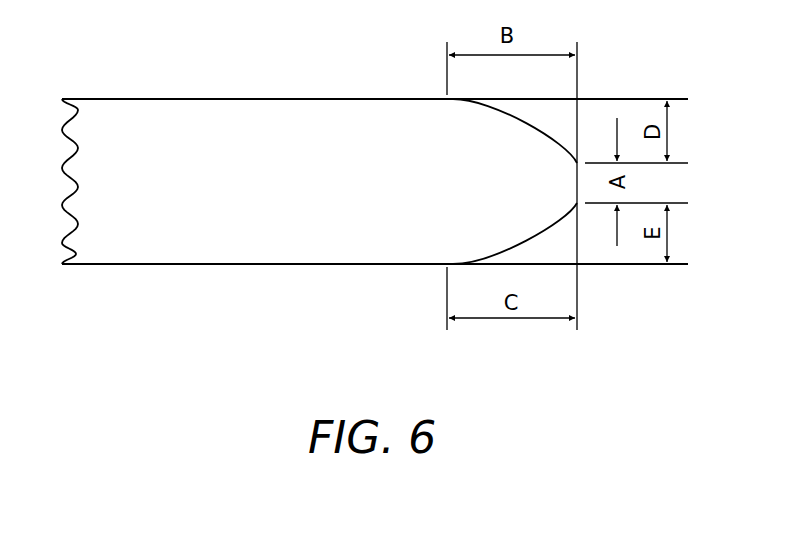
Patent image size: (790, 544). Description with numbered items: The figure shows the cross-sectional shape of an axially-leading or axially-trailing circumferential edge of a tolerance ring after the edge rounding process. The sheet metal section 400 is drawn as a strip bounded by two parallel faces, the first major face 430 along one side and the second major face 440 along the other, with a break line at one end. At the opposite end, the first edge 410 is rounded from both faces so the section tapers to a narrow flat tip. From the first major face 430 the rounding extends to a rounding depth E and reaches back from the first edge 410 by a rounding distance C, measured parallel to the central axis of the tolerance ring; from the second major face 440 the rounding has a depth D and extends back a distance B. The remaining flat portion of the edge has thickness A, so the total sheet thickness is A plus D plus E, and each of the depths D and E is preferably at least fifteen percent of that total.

The sheet metal section 400 is at (375, 179).
The first edge 410 is at (576, 183).
The second major face 440 is at (238, 99).
The first major face 430 is at (240, 264).